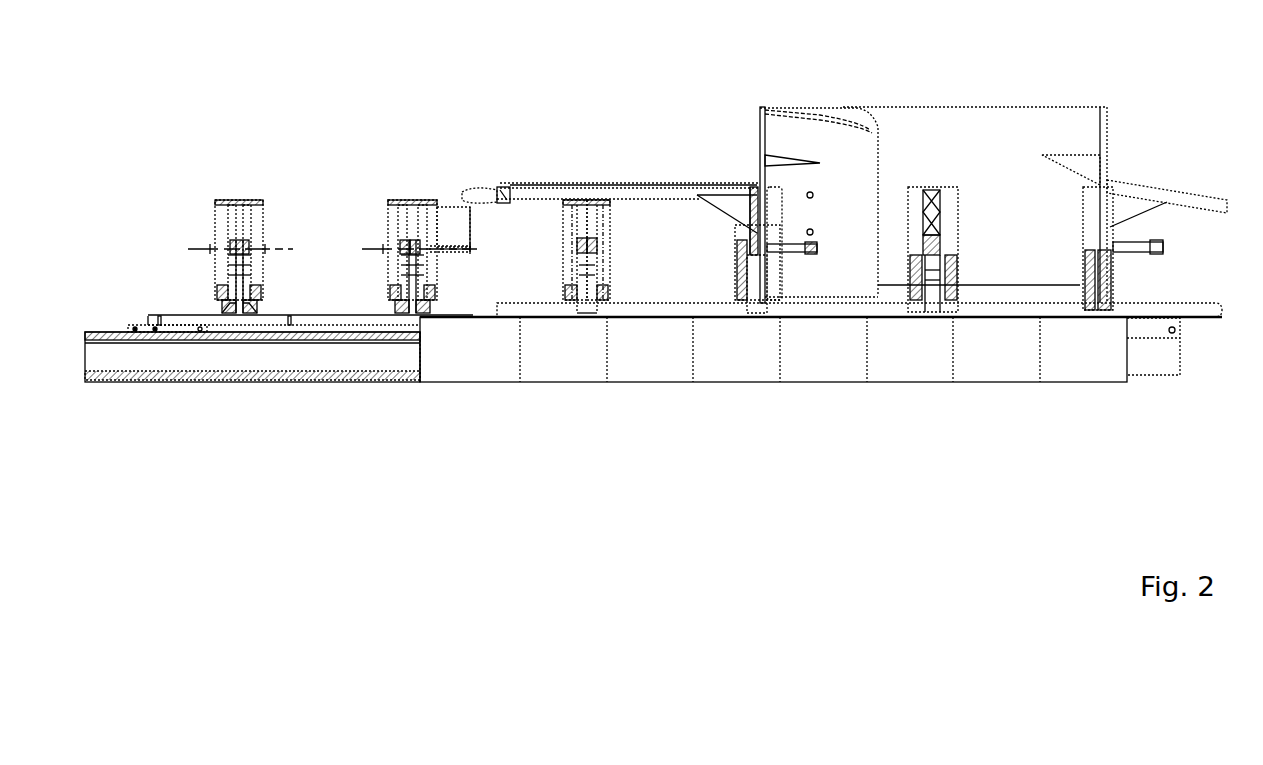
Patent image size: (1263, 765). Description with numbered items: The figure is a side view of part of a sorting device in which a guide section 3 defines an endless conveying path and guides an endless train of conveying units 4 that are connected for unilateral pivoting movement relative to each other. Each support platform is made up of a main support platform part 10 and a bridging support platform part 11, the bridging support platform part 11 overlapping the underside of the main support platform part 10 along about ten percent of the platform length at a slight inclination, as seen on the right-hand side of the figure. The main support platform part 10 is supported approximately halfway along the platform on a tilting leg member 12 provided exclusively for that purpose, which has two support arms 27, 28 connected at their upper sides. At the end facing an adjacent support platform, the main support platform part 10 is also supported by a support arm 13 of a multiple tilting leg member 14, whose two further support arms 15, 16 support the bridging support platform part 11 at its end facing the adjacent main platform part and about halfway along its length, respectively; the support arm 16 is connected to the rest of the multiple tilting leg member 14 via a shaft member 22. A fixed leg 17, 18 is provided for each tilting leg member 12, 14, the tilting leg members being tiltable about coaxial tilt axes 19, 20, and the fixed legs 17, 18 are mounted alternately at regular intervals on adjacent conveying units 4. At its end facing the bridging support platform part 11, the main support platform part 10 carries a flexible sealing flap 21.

The guide section 3 is at (143, 362).
The conveying unit 4 is at (318, 323).
The main support platform part 10 is at (617, 182).
The bridging support platform part 11 is at (807, 128).
The tilting leg member 12 is at (224, 183).
The support arm 13 is at (398, 207).
The multiple tilting leg member 14 is at (370, 177).
The further support arm 15 is at (433, 207).
The further support arm 16 is at (463, 213).
The fixed leg 17 is at (244, 310).
The fixed leg 18 is at (413, 310).
The tilt axis 19 is at (200, 248).
The tilt axis 20 is at (378, 248).
The flexible sealing flap 21 is at (473, 193).
The shaft member 22 is at (453, 252).
The support arm 27 is at (567, 212).
The support arm 28 is at (607, 212).